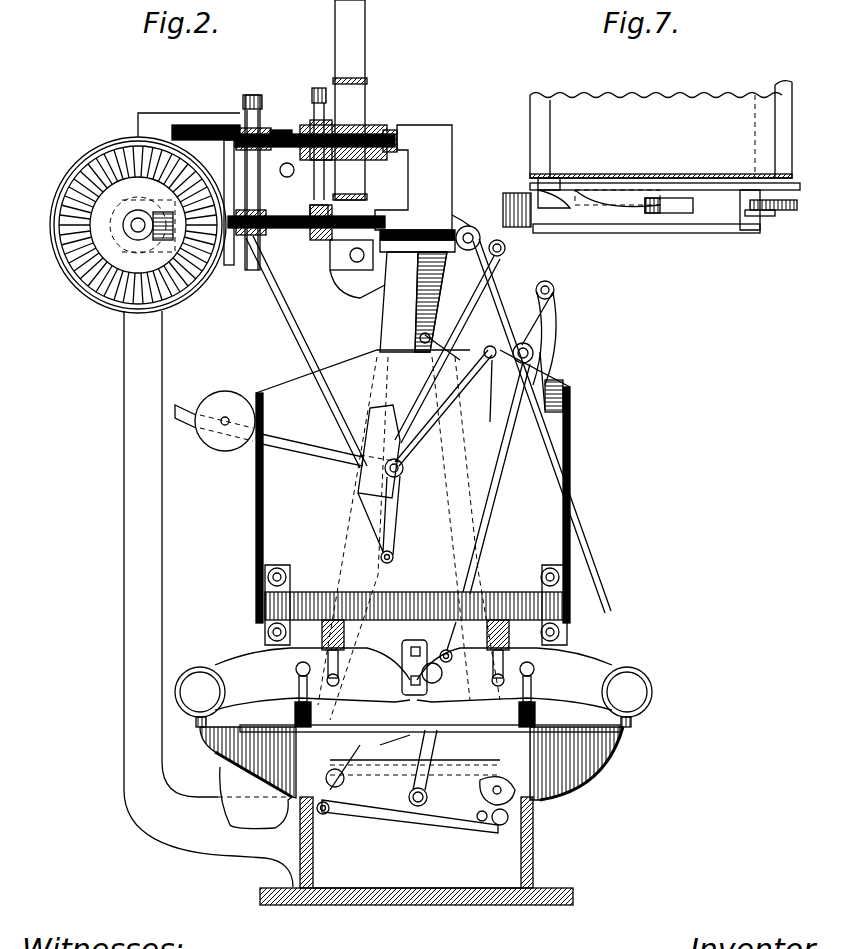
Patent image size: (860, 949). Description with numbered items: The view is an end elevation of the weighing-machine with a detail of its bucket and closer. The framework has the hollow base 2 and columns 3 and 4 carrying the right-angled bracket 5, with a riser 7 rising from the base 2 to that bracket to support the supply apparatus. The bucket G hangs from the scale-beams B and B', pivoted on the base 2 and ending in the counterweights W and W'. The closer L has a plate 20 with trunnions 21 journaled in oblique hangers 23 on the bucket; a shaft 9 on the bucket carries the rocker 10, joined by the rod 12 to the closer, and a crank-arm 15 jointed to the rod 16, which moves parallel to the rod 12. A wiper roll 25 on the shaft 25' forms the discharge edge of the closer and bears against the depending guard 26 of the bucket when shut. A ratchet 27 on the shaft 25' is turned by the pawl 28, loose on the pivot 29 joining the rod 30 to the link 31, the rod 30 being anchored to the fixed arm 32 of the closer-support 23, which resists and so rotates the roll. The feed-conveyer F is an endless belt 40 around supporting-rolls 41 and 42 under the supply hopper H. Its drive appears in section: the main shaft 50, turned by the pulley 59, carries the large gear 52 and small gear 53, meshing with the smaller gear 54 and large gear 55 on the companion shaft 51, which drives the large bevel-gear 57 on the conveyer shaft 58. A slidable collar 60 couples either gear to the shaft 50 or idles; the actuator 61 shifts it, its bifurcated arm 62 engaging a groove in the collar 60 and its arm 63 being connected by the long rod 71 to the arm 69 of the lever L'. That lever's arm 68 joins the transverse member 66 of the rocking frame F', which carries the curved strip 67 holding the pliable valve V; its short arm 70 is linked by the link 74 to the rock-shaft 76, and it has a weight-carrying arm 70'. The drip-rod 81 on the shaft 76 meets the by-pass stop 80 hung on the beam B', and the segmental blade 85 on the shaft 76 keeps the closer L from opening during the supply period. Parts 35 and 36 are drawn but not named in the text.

In FIG. 2, the hollow base 2 is at (533, 855).
In FIG. 2, the end frame or column 3 is at (372, 440).
In FIG. 2, the end frame or column 4 is at (385, 340).
In FIG. 2, the right-angled bracket 5 is at (377, 188).
In FIG. 2, the riser 7 is at (124, 543).
In FIG. 2, the shaft 9 is at (528, 358).
In FIG. 2, the rocker 10 is at (520, 340).
In FIG. 2, the rod 12 is at (533, 353).
In FIG. 2, the crank-arm 15 is at (548, 332).
In FIG. 2, the rod 16 is at (505, 490).
In FIG. 7, the rod 16 is at (688, 213).
In FIG. 2, the closer plate 20 is at (450, 792).
In FIG. 2, the trunnion 21 is at (330, 812).
In FIG. 7, the trunnion 21 is at (548, 220).
In FIG. 2, the hanger or bracket 23 is at (385, 775).
In FIG. 7, the hanger or bracket 23 is at (590, 185).
In FIG. 2, the wiper roll 25 is at (485, 705).
In FIG. 7, the wiper roll 25 is at (740, 129).
In FIG. 7, the roll shaft 25' is at (781, 249).
In FIG. 2, the depending lip or guard 26 is at (540, 722).
In FIG. 2, the ratchet 27 is at (548, 790).
In FIG. 7, the ratchet 27 is at (792, 200).
In FIG. 2, the operating-pawl 28 is at (478, 822).
In FIG. 7, the operating-pawl 28 is at (745, 208).
In FIG. 2, the pivot 29 is at (480, 822).
In FIG. 7, the pivot 29 is at (745, 228).
In FIG. 2, the rod 30 is at (392, 820).
In FIG. 7, the rod 30 is at (640, 233).
In FIG. 2, the link 31 is at (510, 805).
In FIG. 7, the link 31 is at (762, 226).
In FIG. 2, the fixed arm or extension 32 is at (292, 800).
In FIG. 7, the fixed arm or extension 32 is at (518, 198).
In FIG. 2, the support 35 is at (560, 762).
In FIG. 2, the hub 36 is at (136, 232).
In FIG. 2, the endless belt 40 is at (285, 270).
In FIG. 2, the supporting-roll 41 is at (345, 280).
In FIG. 2, the supporting-roll 42 is at (110, 235).
In FIG. 2, the main shaft 50 is at (378, 128).
In FIG. 2, the companion shaft 51 is at (320, 230).
In FIG. 2, the large gear 52 is at (318, 88).
In FIG. 2, the small gear 53 is at (250, 94).
In FIG. 2, the smaller gear 54 is at (258, 262).
In FIG. 2, the large gear 55 is at (245, 236).
In FIG. 2, the large bevel-gear 57 is at (135, 228).
In FIG. 2, the feed-conveyer shaft 58 is at (128, 236).
In FIG. 2, the driver or pulley 59 is at (365, 92).
In FIG. 2, the coupling collar 60 is at (275, 130).
In FIG. 2, the actuator 61 is at (286, 177).
In FIG. 2, the bifurcated arm 62 is at (318, 160).
In FIG. 2, the actuator arm 63 is at (262, 165).
In FIG. 2, the transverse member 66 is at (486, 362).
In FIG. 2, the curved metallic strip 67 is at (495, 375).
In FIG. 2, the arm 68 is at (405, 468).
In FIG. 2, the arm 69 is at (395, 530).
In FIG. 2, the short arm 70 is at (371, 443).
In FIG. 2, the weight-carrying arm 70' is at (232, 432).
In FIG. 2, the rod 71 is at (305, 342).
In FIG. 2, the link 74 is at (425, 368).
In FIG. 2, the rock-shaft 76 is at (470, 226).
In FIG. 2, the by-pass stop 80 is at (446, 650).
In FIG. 2, the drip-rod 81 is at (590, 545).
In FIG. 2, the valve-operative stop 85 is at (466, 290).
In FIG. 2, the scale-beam B is at (312, 679).
In FIG. 2, the scale-beam B' is at (514, 679).
In FIG. 2, the feed-conveyer F is at (342, 272).
In FIG. 2, the rocking frame F' is at (452, 425).
In FIG. 2, the bucket G is at (265, 515).
In FIG. 7, the bucket G is at (532, 105).
In FIG. 2, the supply chute or hopper H is at (160, 116).
In FIG. 2, the closer L is at (415, 785).
In FIG. 7, the closer L is at (676, 147).
In FIG. 2, the valve-actuating lever L' is at (310, 454).
In FIG. 2, the valve V is at (410, 318).
In FIG. 2, the counterweight W is at (200, 697).
In FIG. 2, the counterweight W' is at (627, 697).